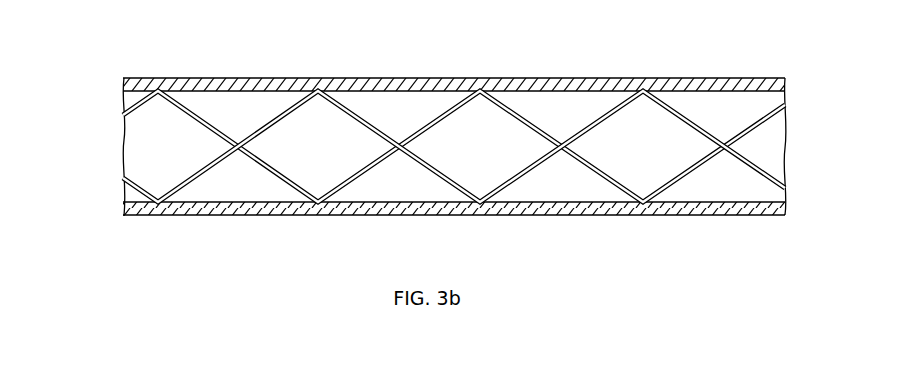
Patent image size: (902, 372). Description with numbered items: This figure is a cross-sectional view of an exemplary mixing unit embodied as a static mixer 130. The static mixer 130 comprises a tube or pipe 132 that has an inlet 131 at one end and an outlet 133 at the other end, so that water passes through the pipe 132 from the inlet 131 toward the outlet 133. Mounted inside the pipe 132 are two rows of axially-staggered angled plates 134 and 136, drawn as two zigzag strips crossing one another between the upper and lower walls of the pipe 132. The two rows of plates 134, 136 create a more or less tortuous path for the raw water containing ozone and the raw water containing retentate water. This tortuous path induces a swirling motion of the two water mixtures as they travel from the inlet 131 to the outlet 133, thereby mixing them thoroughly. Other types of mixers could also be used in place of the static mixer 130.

The static mixer 130 is at (143, 247).
The inlet 131 is at (113, 147).
The tube or pipe 132 is at (257, 217).
The outlet 133 is at (797, 145).
The angled plates 134 is at (505, 185).
The angled plates 136 is at (502, 103).